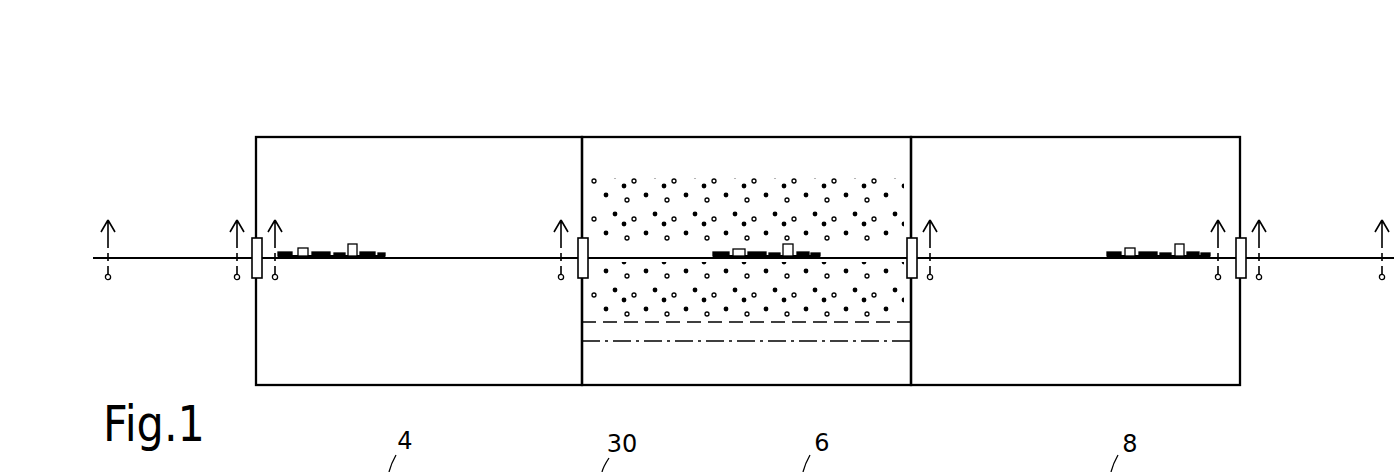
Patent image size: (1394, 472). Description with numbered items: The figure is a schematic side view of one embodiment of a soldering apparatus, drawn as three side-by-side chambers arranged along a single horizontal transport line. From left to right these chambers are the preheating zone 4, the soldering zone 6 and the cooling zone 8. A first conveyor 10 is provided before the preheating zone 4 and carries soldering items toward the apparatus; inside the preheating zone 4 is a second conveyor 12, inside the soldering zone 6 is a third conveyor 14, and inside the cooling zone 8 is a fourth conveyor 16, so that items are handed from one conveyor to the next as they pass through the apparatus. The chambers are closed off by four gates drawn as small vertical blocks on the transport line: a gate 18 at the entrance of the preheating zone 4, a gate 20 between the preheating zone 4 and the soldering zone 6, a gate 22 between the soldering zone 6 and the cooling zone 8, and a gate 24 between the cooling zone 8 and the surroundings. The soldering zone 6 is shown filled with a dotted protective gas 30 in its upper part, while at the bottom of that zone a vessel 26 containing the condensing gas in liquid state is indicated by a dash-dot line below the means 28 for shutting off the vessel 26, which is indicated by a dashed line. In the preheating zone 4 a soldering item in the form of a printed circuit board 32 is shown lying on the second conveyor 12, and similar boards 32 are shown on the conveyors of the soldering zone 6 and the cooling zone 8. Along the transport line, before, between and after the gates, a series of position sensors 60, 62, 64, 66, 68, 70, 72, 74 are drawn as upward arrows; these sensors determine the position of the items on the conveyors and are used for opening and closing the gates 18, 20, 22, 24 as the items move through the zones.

The preheating zone 4 is at (399, 137).
The soldering zone 6 is at (770, 137).
The cooling zone 8 is at (1078, 137).
The first conveyor 10 is at (172, 258).
The second conveyor 12 is at (462, 258).
The third conveyor 14 is at (684, 255).
The fourth conveyor 16 is at (1003, 258).
The gate 18 is at (252, 240).
The gate 20 is at (578, 240).
The gate 22 is at (906, 238).
The gate 24 is at (1237, 243).
The vessel 26 is at (760, 341).
The means for shutting off the vessel 28 is at (697, 322).
The protective gas 30 is at (622, 150).
The printed circuit board 32 is at (322, 252).
The position sensor 60 is at (108, 282).
The position sensor 62 is at (237, 282).
The position sensor 64 is at (275, 282).
The position sensor 66 is at (561, 282).
The position sensor 68 is at (930, 282).
The position sensor 70 is at (1218, 282).
The position sensor 72 is at (1259, 282).
The position sensor 74 is at (1382, 282).